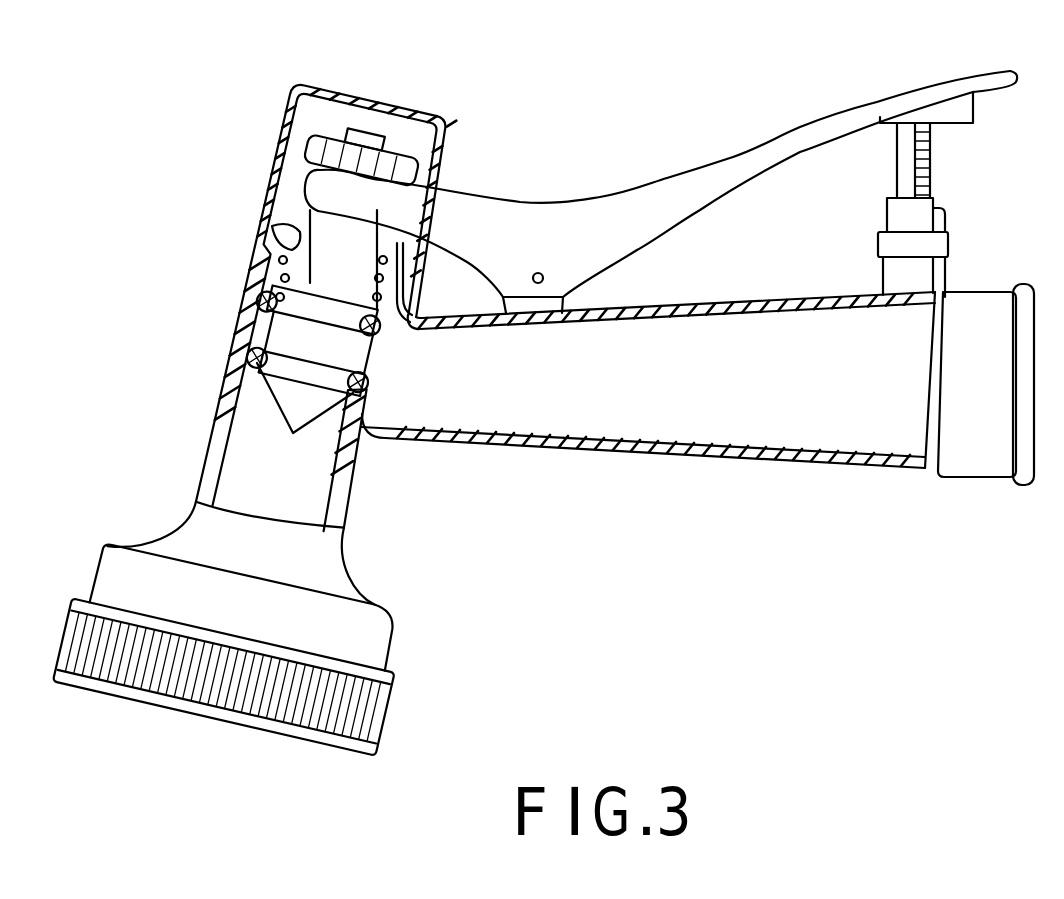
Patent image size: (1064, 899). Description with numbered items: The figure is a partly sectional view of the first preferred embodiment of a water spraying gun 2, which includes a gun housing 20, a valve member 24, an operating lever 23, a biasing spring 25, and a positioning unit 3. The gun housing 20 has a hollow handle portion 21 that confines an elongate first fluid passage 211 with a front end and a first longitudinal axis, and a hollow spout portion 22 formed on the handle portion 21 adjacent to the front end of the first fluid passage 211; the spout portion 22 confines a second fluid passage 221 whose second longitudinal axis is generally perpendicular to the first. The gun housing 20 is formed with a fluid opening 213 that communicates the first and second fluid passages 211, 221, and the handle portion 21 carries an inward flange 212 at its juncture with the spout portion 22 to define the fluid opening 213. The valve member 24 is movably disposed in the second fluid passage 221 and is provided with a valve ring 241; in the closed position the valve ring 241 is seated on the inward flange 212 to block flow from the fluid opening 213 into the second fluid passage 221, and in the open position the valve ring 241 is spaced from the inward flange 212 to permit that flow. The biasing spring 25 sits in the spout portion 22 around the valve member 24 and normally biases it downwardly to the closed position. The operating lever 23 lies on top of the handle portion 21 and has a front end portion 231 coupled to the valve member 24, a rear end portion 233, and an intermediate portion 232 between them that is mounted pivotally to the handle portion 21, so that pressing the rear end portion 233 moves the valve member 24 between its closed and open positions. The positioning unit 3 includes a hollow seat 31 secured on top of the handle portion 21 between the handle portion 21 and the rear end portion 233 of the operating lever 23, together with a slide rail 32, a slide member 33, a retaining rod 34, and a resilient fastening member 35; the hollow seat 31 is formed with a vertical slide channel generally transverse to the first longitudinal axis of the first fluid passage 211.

The water spraying gun 2 is at (603, 149).
The gun housing 20 is at (697, 462).
The handle portion 21 is at (771, 462).
The first fluid passage 211 is at (860, 422).
The inward flange 212 is at (413, 442).
The fluid opening 213 is at (387, 357).
The spout portion 22 is at (387, 643).
The second fluid passage 221 is at (280, 435).
The operating lever 23 is at (767, 137).
The front end portion 231 is at (363, 200).
The intermediate portion 232 is at (538, 253).
The rear end portion 233 is at (922, 98).
The valve member 24 is at (343, 280).
The valve ring 241 is at (255, 360).
The biasing spring 25 is at (265, 238).
The positioning unit 3 is at (958, 177).
The hollow seat 31 is at (900, 212).
The slide rail 32 is at (977, 110).
The slide member 33 is at (893, 155).
The retaining rod 34 is at (947, 222).
The resilient fastening member 35 is at (950, 250).